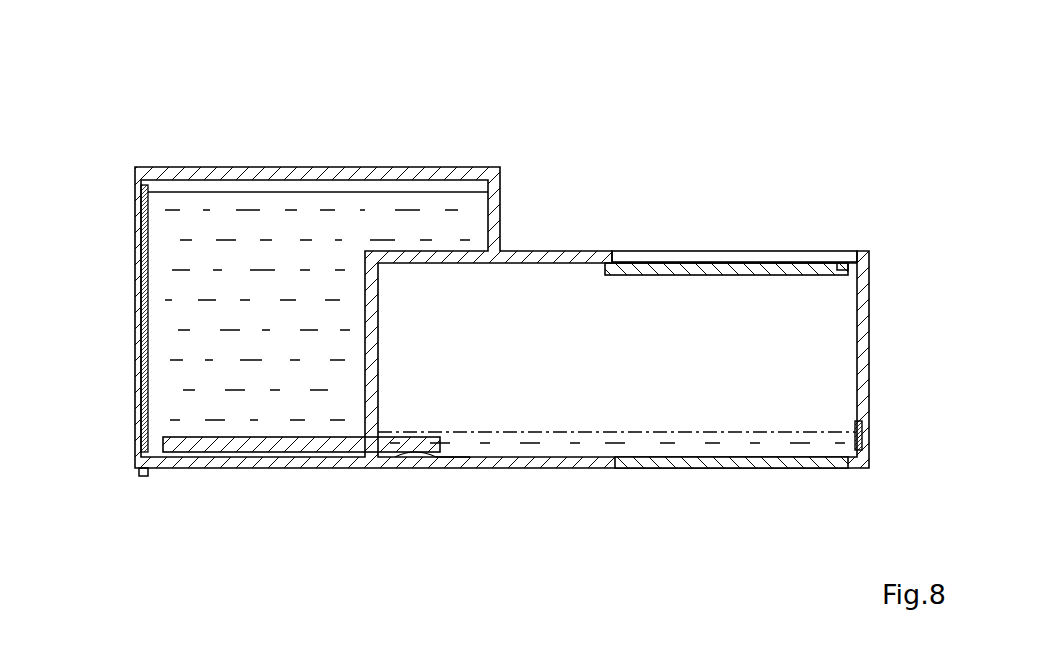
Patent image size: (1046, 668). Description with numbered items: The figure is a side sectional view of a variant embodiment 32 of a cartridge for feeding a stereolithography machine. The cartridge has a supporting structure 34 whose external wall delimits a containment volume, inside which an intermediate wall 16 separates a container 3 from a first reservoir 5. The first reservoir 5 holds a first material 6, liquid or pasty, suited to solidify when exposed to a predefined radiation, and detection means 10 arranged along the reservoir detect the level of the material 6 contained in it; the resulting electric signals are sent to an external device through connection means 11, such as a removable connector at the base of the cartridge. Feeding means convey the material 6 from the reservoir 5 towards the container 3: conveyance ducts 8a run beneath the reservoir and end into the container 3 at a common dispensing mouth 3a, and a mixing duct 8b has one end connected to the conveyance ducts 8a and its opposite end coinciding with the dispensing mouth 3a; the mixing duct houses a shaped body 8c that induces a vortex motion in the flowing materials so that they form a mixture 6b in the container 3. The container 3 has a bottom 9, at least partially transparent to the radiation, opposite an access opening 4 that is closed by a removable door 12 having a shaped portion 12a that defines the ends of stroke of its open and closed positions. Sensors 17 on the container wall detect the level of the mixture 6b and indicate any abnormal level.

The variant embodiment of the cartridge 32 is at (124, 121).
The first reservoir 5 is at (333, 186).
The first material 6 is at (183, 243).
The detection means 10 is at (143, 288).
The connection means 11 is at (145, 478).
The mixing duct 8b is at (256, 458).
The intermediate wall 16 is at (368, 416).
The conveyance ducts 8a is at (403, 456).
The shaped body 8c is at (428, 455).
The dispensing mouth 3a is at (442, 455).
The bottom 9 is at (647, 469).
The mixture 6b is at (773, 441).
The container 3 is at (812, 349).
The access opening 4 is at (798, 251).
The door 12 is at (679, 264).
The shaped portion 12a is at (849, 258).
The supporting structure 34 is at (870, 376).
The sensors 17 is at (866, 428).